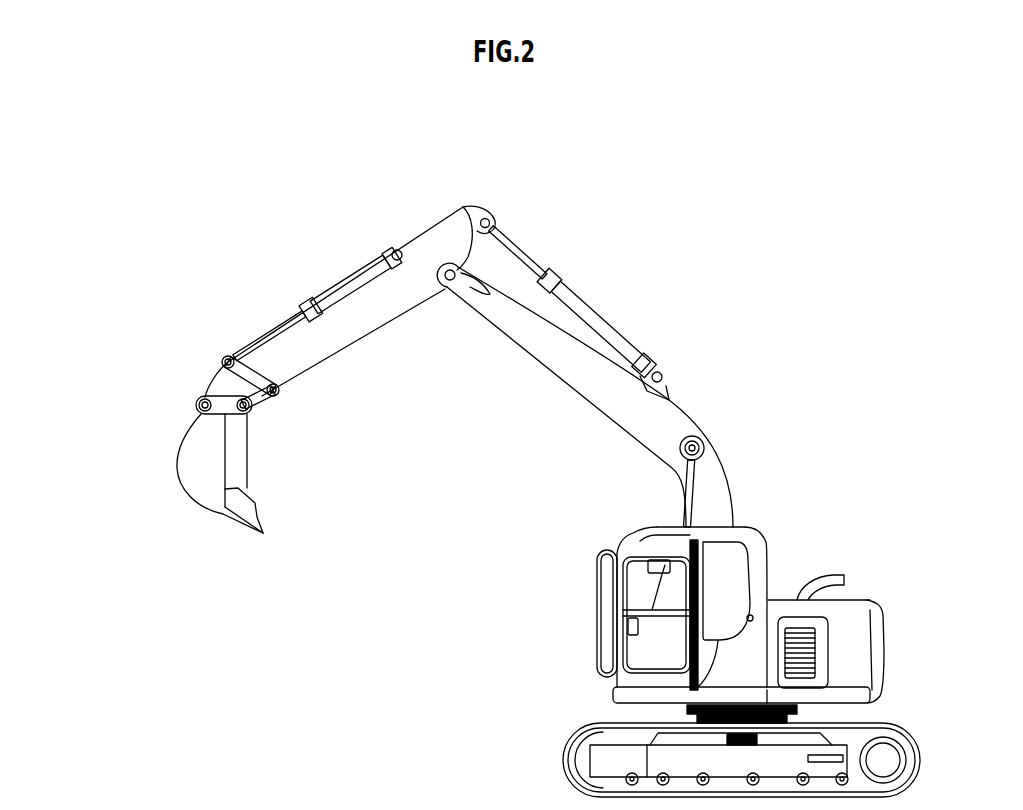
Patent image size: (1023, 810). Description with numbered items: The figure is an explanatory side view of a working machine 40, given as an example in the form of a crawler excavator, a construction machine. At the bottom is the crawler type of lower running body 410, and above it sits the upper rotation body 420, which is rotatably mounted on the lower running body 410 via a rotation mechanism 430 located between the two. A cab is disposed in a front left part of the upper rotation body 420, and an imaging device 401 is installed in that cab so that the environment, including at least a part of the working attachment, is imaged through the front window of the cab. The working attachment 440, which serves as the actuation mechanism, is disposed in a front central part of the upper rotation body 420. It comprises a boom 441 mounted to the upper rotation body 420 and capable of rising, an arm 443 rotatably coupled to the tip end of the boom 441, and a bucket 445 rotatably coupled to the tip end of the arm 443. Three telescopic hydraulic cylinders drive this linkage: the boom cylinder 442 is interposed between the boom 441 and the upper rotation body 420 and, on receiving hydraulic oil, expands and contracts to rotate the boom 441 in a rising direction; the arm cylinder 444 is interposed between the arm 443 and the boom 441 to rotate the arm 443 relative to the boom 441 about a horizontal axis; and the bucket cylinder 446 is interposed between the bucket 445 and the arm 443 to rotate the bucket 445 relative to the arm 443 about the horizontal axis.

The working machine 40 is at (857, 352).
The imaging device 401 is at (743, 536).
The lower running body 410 is at (917, 745).
The upper rotation body 420 is at (895, 643).
The rotation mechanism 430 is at (797, 713).
The working attachment 440 is at (527, 208).
The boom 441 is at (727, 485).
The boom cylinder 442 is at (684, 505).
The arm 443 is at (360, 339).
The arm cylinder 444 is at (587, 307).
The bucket 445 is at (178, 459).
The bucket cylinder 446 is at (320, 296).